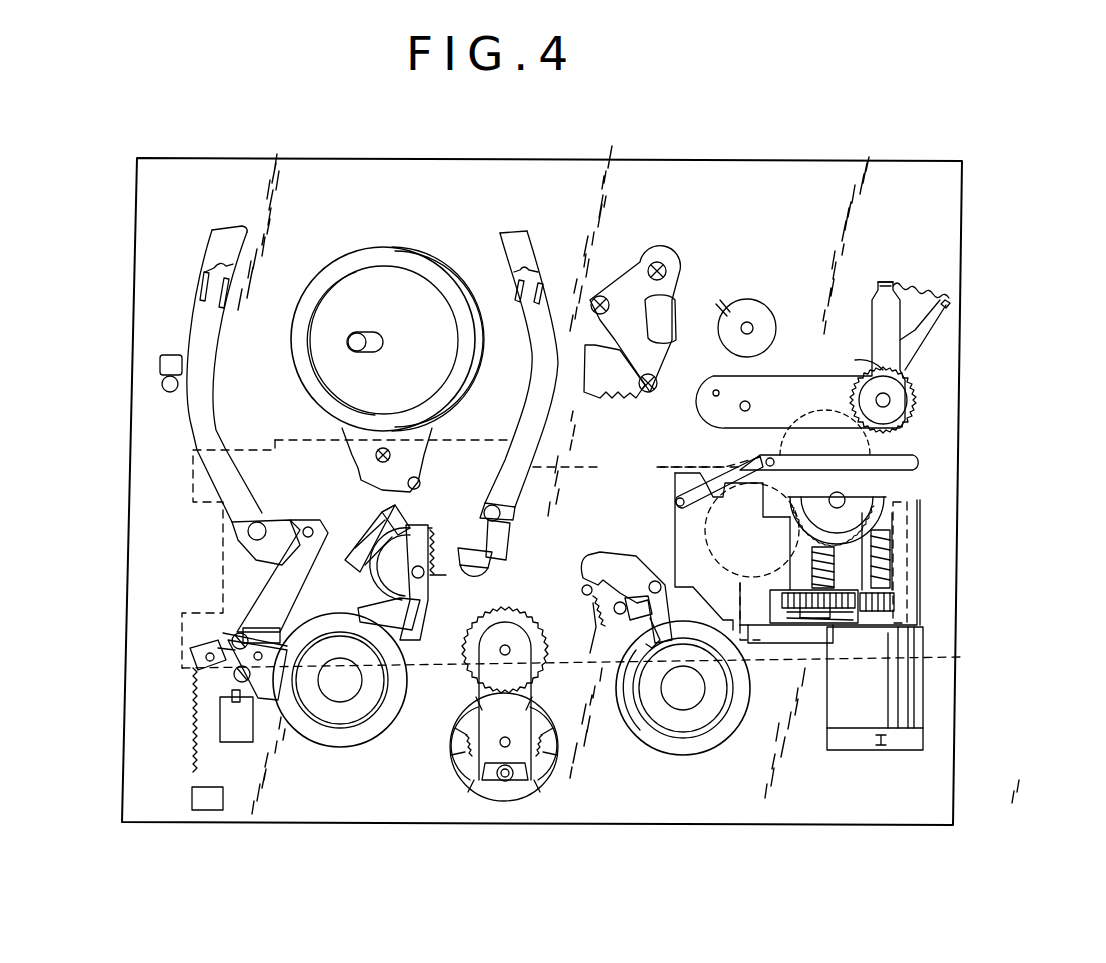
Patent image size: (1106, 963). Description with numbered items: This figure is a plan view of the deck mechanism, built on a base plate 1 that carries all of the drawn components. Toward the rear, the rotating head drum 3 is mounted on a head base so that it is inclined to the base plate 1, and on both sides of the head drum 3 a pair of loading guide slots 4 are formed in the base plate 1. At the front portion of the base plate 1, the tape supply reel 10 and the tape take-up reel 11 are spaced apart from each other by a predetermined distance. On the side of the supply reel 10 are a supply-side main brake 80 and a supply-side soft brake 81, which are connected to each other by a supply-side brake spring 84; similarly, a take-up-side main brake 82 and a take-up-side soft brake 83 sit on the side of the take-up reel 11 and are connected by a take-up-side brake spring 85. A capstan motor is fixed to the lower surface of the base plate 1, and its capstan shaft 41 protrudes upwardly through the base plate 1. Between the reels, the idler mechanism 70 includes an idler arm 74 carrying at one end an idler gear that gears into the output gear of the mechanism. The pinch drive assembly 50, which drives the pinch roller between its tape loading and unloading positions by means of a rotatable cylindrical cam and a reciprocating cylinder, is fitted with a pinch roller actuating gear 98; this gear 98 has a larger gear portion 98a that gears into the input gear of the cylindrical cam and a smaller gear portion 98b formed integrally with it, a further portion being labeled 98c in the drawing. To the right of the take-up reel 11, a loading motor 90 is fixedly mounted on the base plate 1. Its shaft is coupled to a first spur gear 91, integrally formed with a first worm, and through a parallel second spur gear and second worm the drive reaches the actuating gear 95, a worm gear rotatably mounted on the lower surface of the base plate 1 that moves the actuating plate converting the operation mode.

The base plate 1 is at (148, 188).
The rotating head drum 3 is at (378, 256).
The loading guide slots 4 is at (205, 456).
The tape supply reel 10 is at (333, 740).
The tape take-up reel 11 is at (725, 735).
The capstan shaft 41 is at (750, 322).
The pinch drive assembly 50 is at (924, 366).
The idler mechanism 70 is at (548, 785).
The idler arm 74 is at (548, 788).
The supply-side main brake 80 is at (370, 628).
The supply-side soft brake 81 is at (404, 640).
The take-up-side main brake 82 is at (682, 615).
The take-up-side soft brake 83 is at (621, 705).
The supply-side brake spring 84 is at (440, 535).
The take-up-side brake spring 85 is at (587, 635).
The loading motor 90 is at (925, 690).
The first spur gear 91 is at (900, 604).
The actuating gear 95 is at (890, 582).
The pinch roller actuating gear 98 is at (905, 495).
The larger gear portion 98a is at (895, 525).
The smaller gear portion 98b is at (900, 482).
The worm gear 98c is at (845, 560).